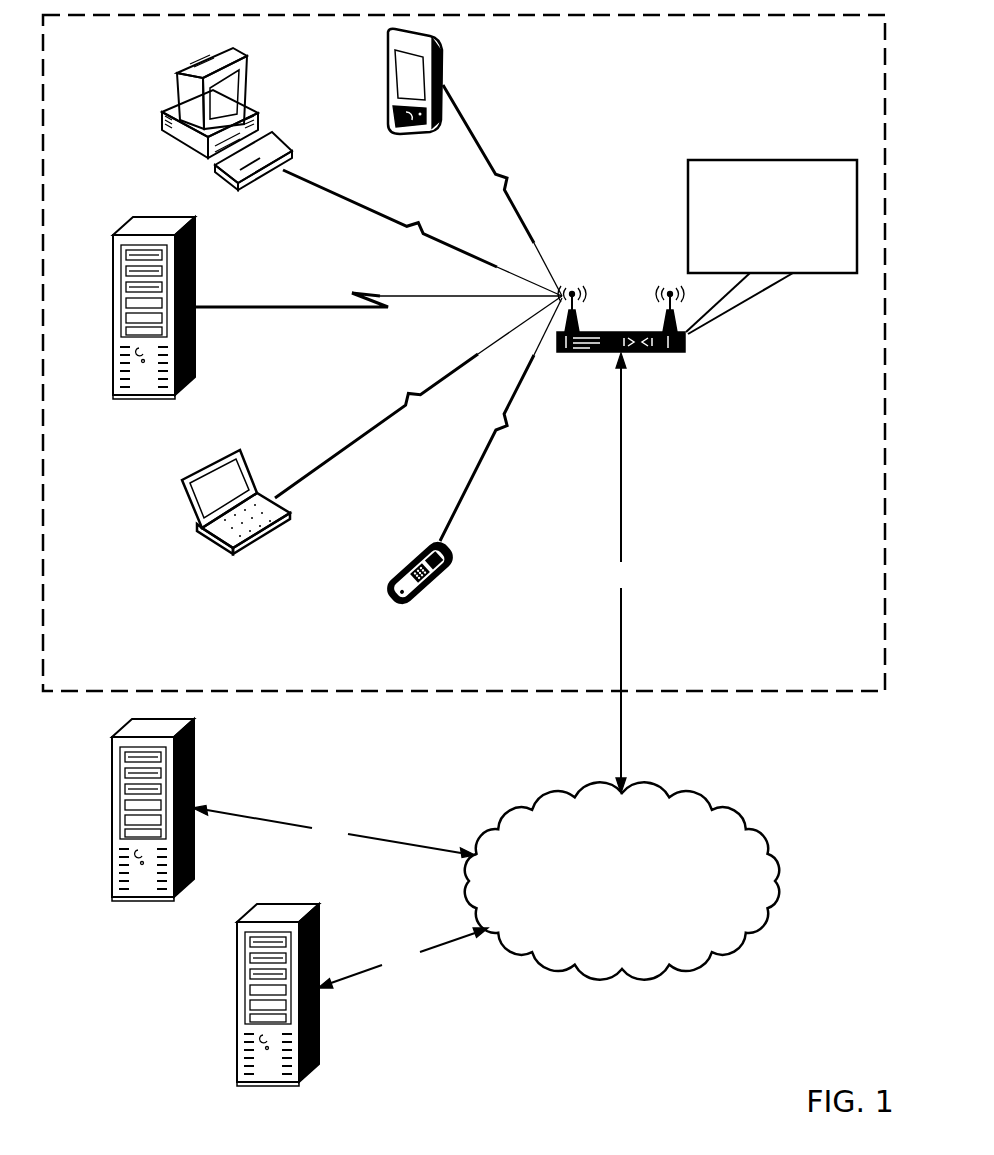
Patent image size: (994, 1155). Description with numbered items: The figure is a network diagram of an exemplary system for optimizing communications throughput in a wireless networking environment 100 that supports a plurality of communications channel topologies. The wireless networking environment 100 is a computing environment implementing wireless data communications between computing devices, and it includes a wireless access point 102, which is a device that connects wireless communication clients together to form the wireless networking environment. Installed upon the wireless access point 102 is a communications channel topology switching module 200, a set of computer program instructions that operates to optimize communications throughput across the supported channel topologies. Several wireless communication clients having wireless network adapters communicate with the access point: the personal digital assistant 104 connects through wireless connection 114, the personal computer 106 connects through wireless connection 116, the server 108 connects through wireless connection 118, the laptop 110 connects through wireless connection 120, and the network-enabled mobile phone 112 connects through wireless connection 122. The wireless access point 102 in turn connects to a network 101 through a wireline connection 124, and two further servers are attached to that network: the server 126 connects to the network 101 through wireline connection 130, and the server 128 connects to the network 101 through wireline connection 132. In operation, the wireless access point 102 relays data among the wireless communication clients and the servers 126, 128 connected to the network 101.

The wireless networking environment 100 is at (837, 79).
The network 101 is at (675, 891).
The wireless access point 102 is at (718, 408).
The personal digital assistant (PDA) 104 is at (467, 91).
The personal computer 106 is at (91, 150).
The server 108 is at (189, 424).
The laptop 110 is at (249, 586).
The network-enabled mobile phone 112 is at (397, 667).
The wireless connection 114 is at (474, 225).
The wireless connection 116 is at (361, 253).
The wireless connection 118 is at (361, 332).
The wireless connection 120 is at (388, 450).
The wireless connection 122 is at (490, 469).
The wireline connection 124 is at (604, 581).
The server 126 is at (188, 921).
The server 128 is at (316, 1107).
The wireline connection 130 is at (313, 840).
The wireline connection 132 is at (383, 967).
The communications channel topology switching module 200 is at (755, 265).